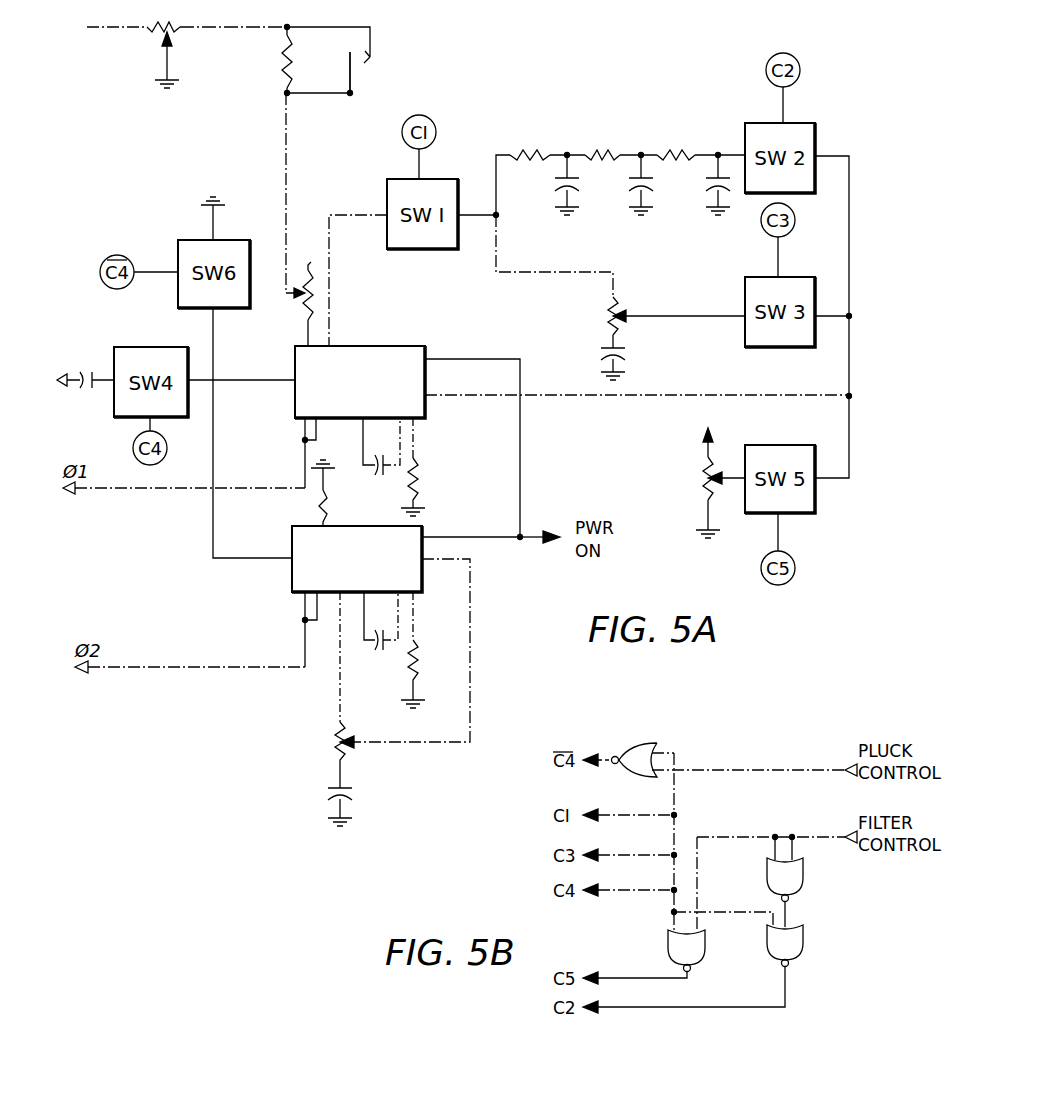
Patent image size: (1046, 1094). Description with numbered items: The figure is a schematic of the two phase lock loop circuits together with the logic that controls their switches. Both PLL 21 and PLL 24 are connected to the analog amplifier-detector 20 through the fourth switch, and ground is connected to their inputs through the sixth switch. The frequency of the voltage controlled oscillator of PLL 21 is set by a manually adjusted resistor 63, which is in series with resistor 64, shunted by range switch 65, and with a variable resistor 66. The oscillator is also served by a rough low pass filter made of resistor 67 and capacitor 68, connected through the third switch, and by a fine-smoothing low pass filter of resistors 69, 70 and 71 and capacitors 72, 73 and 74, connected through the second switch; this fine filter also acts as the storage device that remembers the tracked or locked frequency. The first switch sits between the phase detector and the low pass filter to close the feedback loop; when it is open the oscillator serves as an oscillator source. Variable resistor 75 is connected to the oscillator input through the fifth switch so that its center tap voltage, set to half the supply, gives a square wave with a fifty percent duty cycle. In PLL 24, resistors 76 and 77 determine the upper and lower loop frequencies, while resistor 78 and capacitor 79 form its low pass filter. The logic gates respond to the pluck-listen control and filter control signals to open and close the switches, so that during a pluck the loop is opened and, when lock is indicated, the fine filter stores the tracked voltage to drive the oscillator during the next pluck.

The analog amplifier-detector 20 is at (60, 372).
The PLL 21 is at (360, 382).
The PLL 24 is at (357, 559).
The resistor 63 is at (181, 31).
The resistor 64 is at (285, 62).
The range switch 65 is at (356, 72).
The variable resistor 66 is at (316, 290).
The resistor 67 is at (605, 322).
The capacitor 68 is at (626, 345).
The resistor 69 is at (545, 118).
The resistor 70 is at (598, 147).
The resistor 71 is at (690, 150).
The capacitor 72 is at (556, 190).
The capacitor 73 is at (634, 188).
The capacitor 74 is at (711, 188).
The variable resistor 75 is at (700, 486).
The resistor 76 is at (329, 519).
The resistor 77 is at (420, 672).
The resistor 78 is at (334, 735).
The capacitor 79 is at (334, 794).